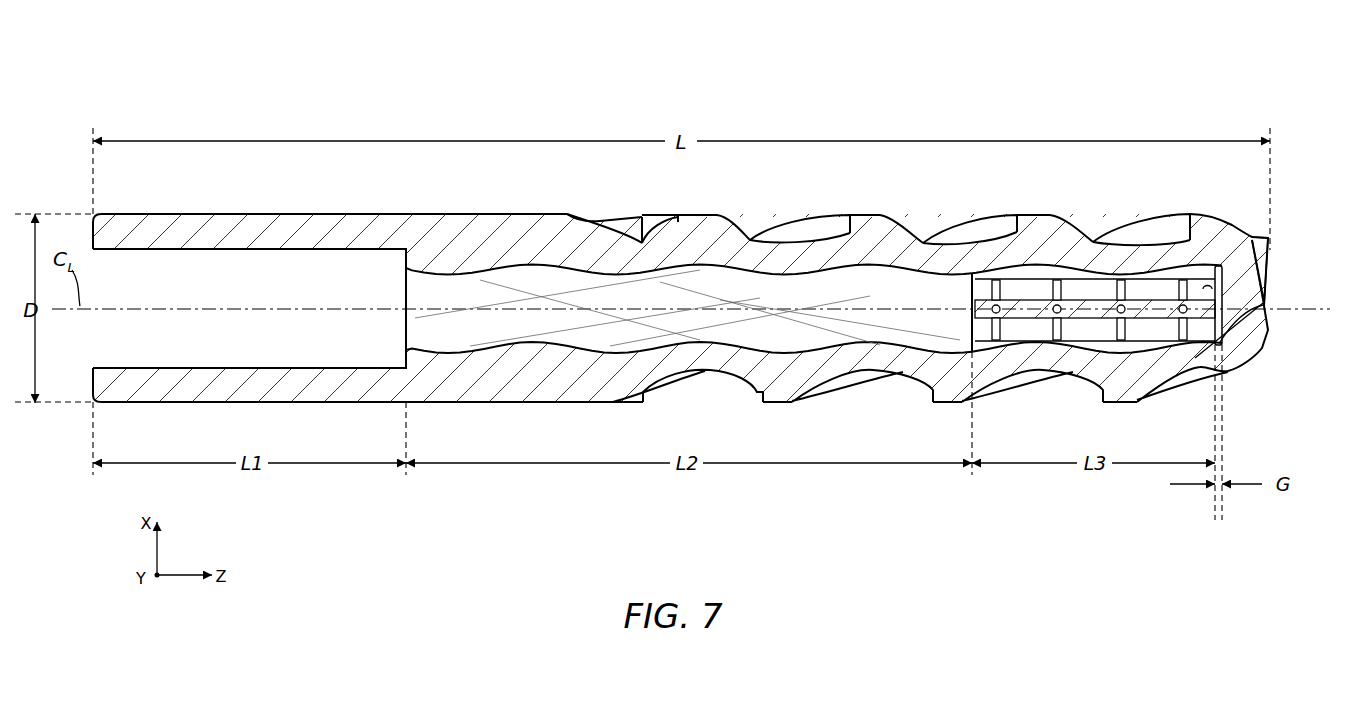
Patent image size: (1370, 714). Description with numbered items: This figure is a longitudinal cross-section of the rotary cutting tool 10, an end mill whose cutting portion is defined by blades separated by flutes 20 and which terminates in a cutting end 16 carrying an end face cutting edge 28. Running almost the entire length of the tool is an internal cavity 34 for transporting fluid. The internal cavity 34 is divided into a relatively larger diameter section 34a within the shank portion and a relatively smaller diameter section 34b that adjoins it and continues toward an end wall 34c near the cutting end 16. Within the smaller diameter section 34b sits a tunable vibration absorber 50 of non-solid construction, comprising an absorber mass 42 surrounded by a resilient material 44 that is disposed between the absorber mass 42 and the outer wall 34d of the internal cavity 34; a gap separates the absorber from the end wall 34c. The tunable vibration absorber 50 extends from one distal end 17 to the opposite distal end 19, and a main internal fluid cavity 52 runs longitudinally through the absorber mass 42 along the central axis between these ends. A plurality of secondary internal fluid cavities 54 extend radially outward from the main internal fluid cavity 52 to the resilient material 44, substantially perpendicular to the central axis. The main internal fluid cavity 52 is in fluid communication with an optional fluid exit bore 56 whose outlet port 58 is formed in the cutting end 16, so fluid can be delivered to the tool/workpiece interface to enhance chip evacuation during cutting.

The rotary cutting tool 10 is at (323, 118).
The cutting end 16 is at (1320, 232).
The distal end 17 is at (968, 286).
The opposite distal end 19 is at (1258, 350).
The flutes 20 is at (626, 234).
The end face cutting edge 28 is at (1278, 252).
The internal cavity 34 is at (817, 325).
The relatively larger diameter section 34a is at (279, 337).
The relatively smaller diameter section 34b is at (612, 313).
The end wall 34c is at (1213, 286).
The outer wall 34d is at (728, 336).
The absorber mass 42 is at (1142, 327).
The resilient material 44 is at (1170, 342).
The tunable vibration absorber 50 is at (1060, 258).
The main internal fluid cavity 52 is at (1075, 312).
The secondary internal fluid cavities 54 is at (1057, 323).
The fluid exit bore 56 is at (1268, 313).
The outlet port 58 is at (1270, 304).